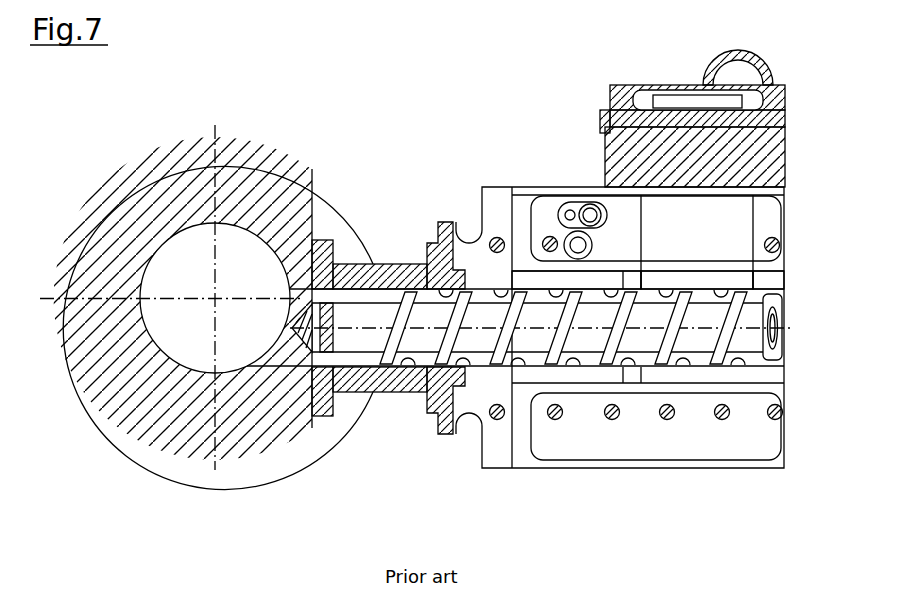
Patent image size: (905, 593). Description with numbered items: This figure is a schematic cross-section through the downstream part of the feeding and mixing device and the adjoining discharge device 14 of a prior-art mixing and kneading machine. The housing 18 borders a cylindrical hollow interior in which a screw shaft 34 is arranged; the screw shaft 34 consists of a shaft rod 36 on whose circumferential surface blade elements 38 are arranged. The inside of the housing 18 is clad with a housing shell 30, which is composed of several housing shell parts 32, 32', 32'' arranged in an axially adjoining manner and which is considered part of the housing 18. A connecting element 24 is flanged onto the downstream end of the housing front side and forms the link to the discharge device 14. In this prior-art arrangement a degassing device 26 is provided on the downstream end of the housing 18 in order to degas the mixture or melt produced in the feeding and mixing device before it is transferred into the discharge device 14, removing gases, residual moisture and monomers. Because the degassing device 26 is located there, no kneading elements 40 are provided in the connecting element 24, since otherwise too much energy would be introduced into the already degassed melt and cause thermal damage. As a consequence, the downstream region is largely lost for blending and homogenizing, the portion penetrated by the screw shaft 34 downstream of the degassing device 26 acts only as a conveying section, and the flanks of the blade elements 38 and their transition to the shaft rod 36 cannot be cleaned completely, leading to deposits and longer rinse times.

The discharge device 14 is at (245, 113).
The housing 18 is at (770, 445).
The connecting element 24 is at (397, 264).
The degassing device 26 is at (788, 113).
The housing shell 30 is at (575, 369).
The housing shell part 32 is at (576, 212).
The housing shell part 32' is at (757, 232).
The housing shell part 32'' is at (816, 268).
The screw shaft 34 is at (358, 333).
The shaft rod 36 is at (418, 342).
The blade elements 38 is at (433, 363).
The kneading elements 40 is at (630, 366).